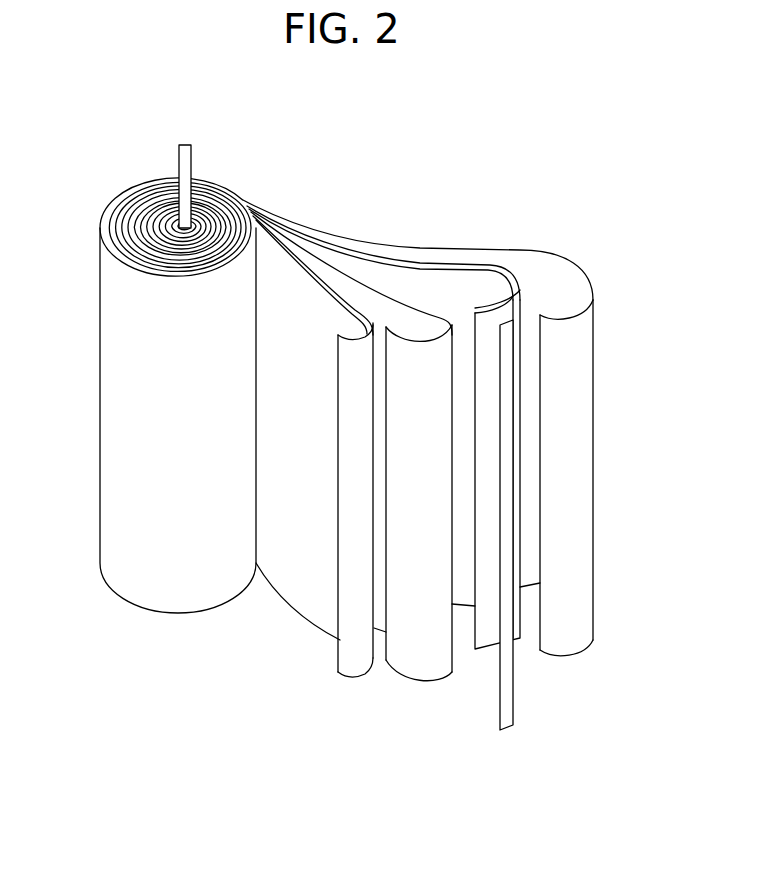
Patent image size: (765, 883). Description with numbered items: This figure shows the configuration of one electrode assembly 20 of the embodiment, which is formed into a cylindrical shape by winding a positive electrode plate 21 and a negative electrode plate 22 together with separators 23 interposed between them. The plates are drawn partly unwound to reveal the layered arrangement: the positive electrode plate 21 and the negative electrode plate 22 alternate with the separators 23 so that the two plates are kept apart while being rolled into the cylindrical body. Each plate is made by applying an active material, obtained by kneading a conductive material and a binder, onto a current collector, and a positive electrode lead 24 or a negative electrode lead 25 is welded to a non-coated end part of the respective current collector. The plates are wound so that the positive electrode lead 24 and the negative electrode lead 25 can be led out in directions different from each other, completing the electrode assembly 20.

The electrode assembly 20 is at (517, 173).
The positive electrode plate 21 is at (356, 665).
The negative electrode plate 22 is at (428, 287).
The separator 23 is at (415, 665).
The positive electrode lead 24 is at (183, 143).
The negative electrode lead 25 is at (508, 697).